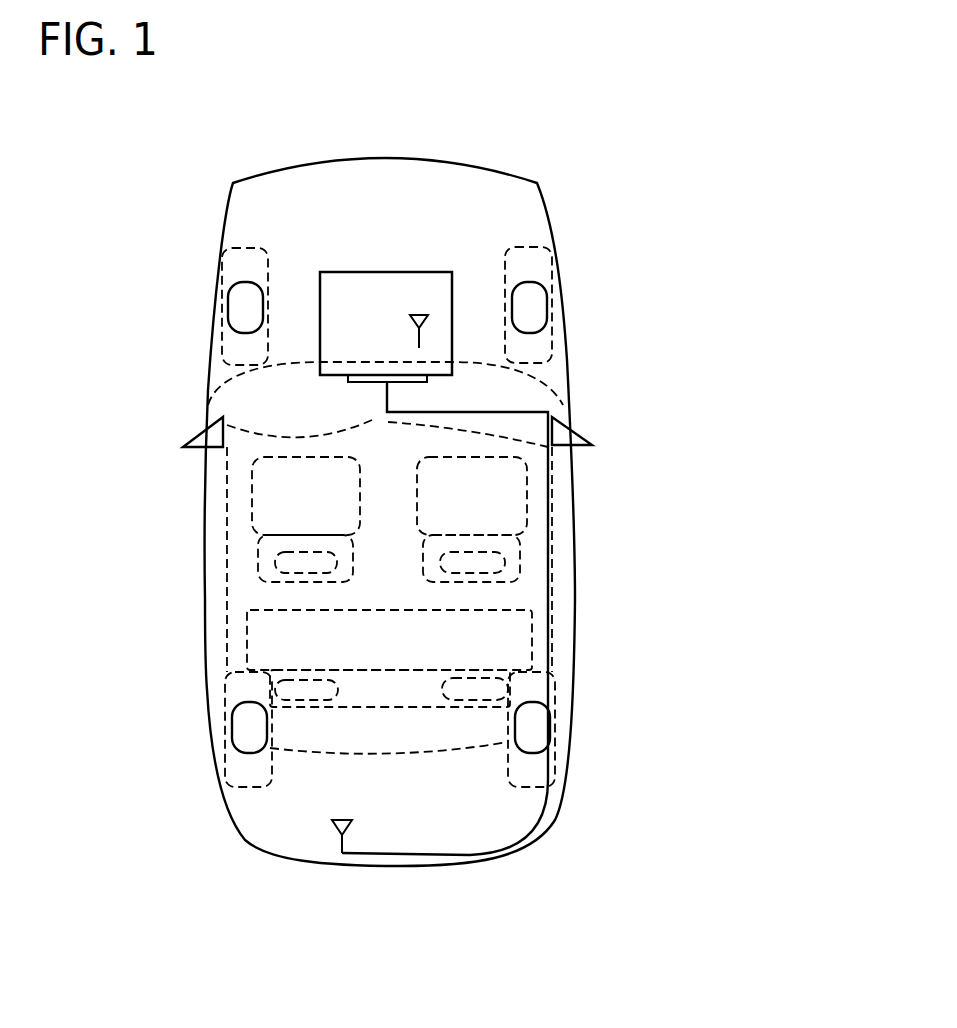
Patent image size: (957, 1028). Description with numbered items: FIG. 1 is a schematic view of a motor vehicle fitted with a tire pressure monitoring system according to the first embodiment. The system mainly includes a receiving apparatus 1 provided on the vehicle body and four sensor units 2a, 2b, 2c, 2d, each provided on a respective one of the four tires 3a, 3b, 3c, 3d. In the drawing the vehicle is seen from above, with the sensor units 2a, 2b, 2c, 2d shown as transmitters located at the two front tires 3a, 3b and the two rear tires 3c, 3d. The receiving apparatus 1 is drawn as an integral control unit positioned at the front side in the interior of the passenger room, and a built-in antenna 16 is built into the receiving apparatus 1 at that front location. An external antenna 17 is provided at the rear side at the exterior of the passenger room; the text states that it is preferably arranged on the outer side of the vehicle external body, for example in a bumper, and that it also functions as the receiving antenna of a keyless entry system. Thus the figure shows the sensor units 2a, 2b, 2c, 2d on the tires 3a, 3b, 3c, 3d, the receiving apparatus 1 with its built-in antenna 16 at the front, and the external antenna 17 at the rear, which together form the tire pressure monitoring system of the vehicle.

The receiving apparatus 1 is at (425, 272).
The sensor unit 2a is at (230, 308).
The sensor unit 2b is at (547, 307).
The sensor unit 2c is at (232, 727).
The sensor unit 2d is at (550, 727).
The tire 3a is at (223, 282).
The tire 3b is at (552, 280).
The tire 3c is at (225, 700).
The tire 3d is at (555, 700).
The built-in antenna 16 is at (441, 339).
The external antenna 17 is at (323, 838).